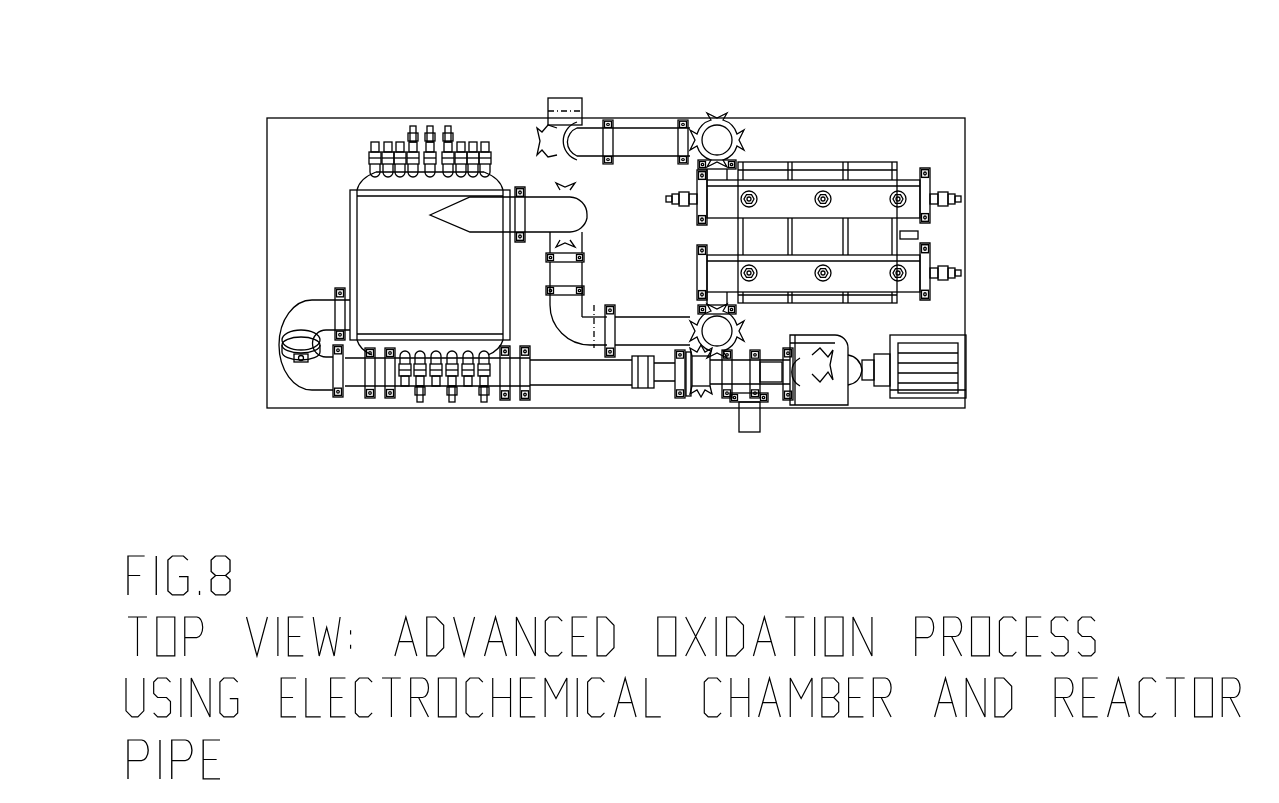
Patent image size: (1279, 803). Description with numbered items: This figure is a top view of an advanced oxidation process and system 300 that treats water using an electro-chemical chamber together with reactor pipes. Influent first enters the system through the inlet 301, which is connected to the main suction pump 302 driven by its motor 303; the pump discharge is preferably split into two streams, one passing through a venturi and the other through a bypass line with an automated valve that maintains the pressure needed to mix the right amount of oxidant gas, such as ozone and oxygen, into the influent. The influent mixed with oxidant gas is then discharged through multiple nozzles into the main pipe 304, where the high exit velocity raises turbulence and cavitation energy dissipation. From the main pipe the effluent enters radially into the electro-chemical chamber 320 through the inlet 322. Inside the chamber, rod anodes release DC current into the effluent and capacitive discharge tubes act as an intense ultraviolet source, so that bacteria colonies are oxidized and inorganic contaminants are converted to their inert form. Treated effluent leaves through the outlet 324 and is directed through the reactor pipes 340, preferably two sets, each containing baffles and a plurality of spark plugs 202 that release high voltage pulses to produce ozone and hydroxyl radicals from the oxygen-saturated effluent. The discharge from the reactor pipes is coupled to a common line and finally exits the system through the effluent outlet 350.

The spark plugs 202 is at (905, 196).
The advanced oxidation process and system 300 is at (1022, 138).
The inlet 301 is at (800, 455).
The main suction pump 302 is at (838, 380).
The motor 303 is at (937, 372).
The main pipe 304 is at (575, 372).
The electro-chemical chamber 320 is at (390, 265).
The inlet 322 is at (326, 312).
The outlet 324 is at (550, 215).
The reactor pipes 340 is at (790, 200).
The effluent outlet 350 is at (565, 106).